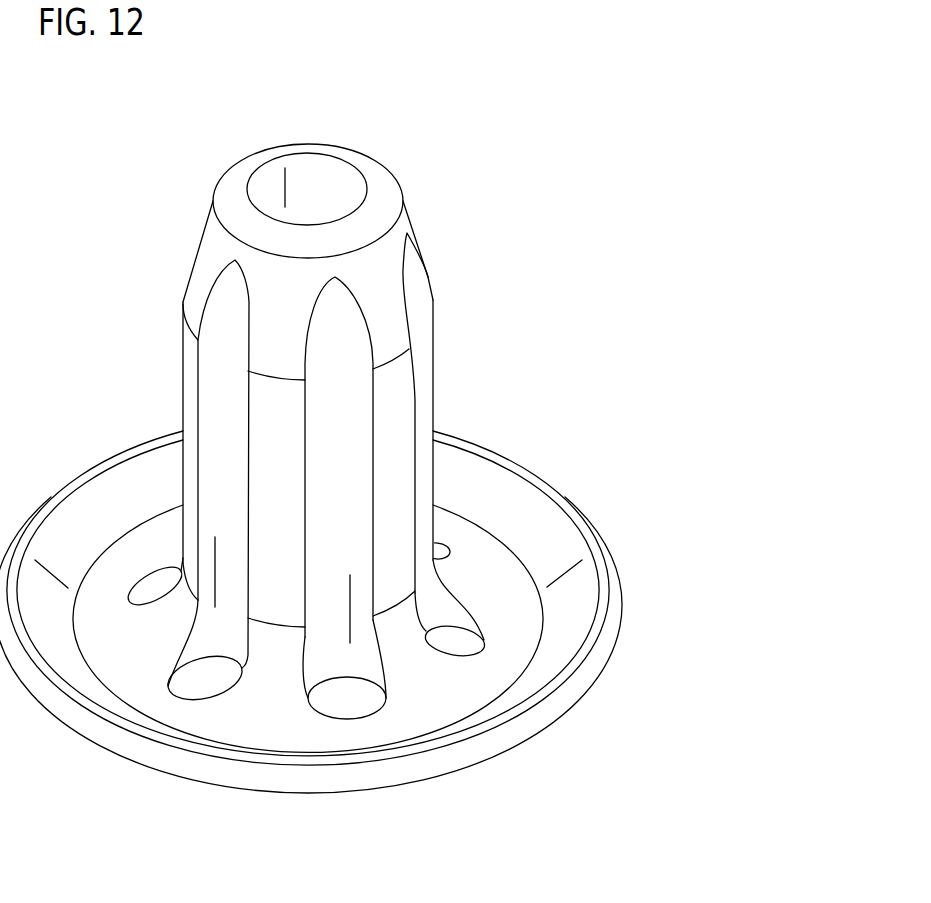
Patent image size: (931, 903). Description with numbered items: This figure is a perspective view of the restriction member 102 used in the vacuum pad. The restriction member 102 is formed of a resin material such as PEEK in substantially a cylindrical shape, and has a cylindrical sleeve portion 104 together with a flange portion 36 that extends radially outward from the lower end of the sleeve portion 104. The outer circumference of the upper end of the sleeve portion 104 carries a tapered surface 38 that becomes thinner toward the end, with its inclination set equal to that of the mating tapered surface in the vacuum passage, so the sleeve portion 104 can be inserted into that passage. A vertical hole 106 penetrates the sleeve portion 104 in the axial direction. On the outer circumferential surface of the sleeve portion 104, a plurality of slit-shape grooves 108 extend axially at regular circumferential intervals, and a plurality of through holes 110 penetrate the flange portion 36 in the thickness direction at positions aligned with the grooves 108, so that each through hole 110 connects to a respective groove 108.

The restriction member 102 is at (93, 128).
The flange portion 36 is at (538, 472).
The tapered surface 38 is at (373, 280).
The sleeve portion 104 is at (436, 274).
The vertical hole 106 is at (300, 178).
The grooves 108 is at (357, 405).
The through holes 110 is at (355, 703).